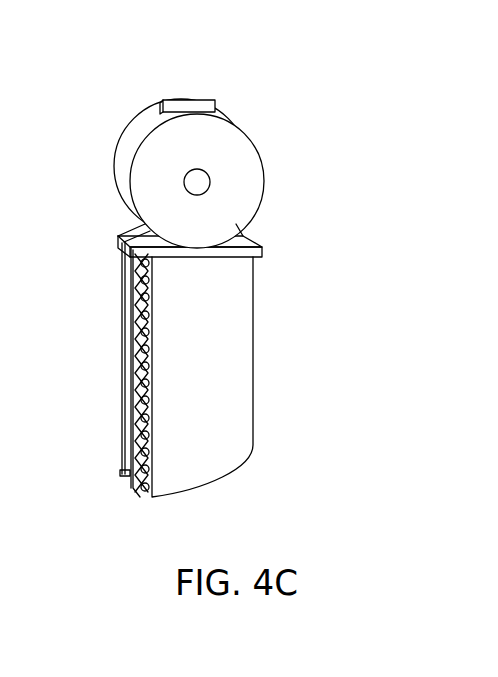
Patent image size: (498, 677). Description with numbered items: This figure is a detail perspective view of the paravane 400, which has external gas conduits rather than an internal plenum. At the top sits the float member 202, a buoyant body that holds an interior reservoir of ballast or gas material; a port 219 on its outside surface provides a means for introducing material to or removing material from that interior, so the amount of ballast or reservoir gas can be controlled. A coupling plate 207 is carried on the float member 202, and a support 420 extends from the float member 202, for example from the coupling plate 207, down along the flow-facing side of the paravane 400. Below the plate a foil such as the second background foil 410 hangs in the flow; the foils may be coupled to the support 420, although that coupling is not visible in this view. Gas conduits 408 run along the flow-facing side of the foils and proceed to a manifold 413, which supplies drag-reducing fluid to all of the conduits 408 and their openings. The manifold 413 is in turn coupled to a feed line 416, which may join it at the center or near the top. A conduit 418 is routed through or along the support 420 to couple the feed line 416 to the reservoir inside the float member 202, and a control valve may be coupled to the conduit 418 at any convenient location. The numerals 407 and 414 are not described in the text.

The paravane 400 is at (188, 264).
The float member 202 is at (130, 122).
The port 219 is at (196, 100).
The coupling plate 207 is at (258, 243).
The conduit 418 is at (134, 229).
The support column 407 is at (133, 283).
The gas conduits 408 is at (149, 347).
The feed line 416 is at (125, 392).
The guide track 414 is at (134, 412).
The manifold 413 is at (125, 432).
The support 420 is at (125, 472).
The second background foil 410 is at (152, 447).